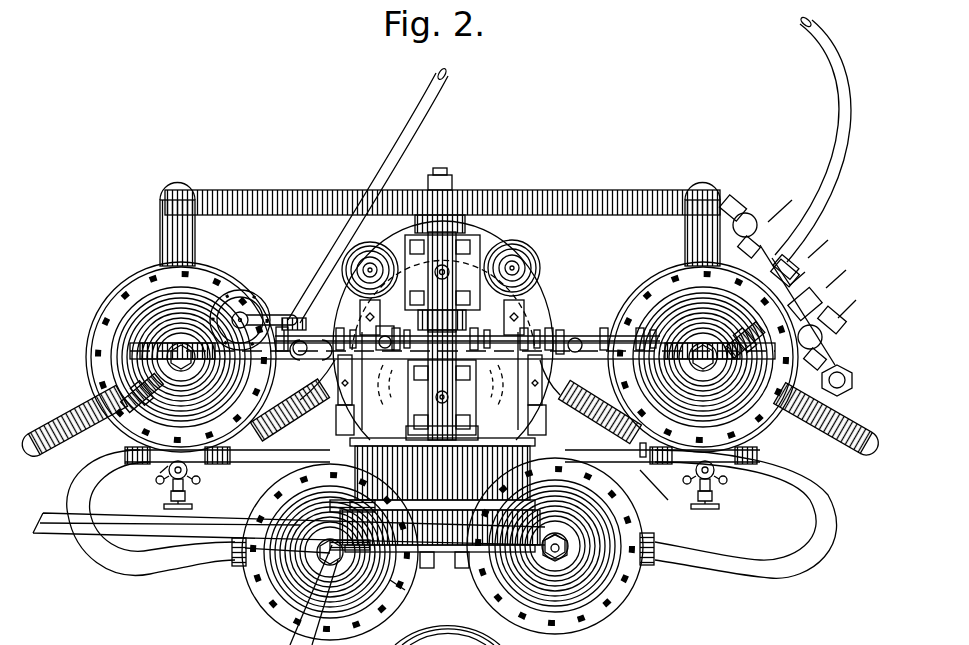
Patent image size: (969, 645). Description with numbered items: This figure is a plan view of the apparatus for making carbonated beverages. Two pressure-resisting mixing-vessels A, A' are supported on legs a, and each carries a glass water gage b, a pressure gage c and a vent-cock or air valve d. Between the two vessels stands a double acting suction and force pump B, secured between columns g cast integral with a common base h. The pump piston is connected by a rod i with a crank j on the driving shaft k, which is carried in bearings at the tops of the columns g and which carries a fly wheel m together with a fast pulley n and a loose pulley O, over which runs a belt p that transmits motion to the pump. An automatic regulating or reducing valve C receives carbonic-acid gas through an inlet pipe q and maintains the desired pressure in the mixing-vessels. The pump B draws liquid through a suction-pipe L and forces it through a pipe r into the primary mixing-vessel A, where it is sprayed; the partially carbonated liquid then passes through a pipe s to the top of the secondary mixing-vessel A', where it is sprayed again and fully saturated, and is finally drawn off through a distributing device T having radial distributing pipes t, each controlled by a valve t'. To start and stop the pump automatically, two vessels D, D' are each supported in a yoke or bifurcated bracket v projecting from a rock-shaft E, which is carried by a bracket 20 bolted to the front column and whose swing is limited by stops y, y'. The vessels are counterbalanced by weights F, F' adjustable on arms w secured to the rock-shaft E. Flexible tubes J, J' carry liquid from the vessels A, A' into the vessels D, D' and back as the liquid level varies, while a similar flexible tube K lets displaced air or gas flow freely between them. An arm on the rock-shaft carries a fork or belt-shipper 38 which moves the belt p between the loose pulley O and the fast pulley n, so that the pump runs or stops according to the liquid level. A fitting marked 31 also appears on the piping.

The fly wheel m is at (268, 198).
The legs a is at (162, 243).
The primary mixing-vessel A is at (158, 357).
The secondary mixing-vessel A' is at (687, 357).
The pressure gage c is at (140, 330).
The automatic regulating or reducing valve C is at (240, 302).
The weight F is at (338, 283).
The weight F' is at (539, 283).
The driving shaft k is at (455, 190).
The columns or standards g is at (468, 248).
The double acting suction and force pump B is at (462, 338).
The fast pulley n is at (440, 495).
The pipe s is at (292, 332).
The crank j is at (388, 332).
The pipe r is at (290, 330).
The rod i is at (470, 350).
The bracket 20 is at (366, 370).
The base h is at (545, 290).
The collar 31 is at (300, 340).
The suction-pipe L is at (678, 500).
The arms w is at (320, 380).
The stop y is at (344, 383).
The stop y' is at (536, 383).
The rock-shaft E is at (438, 389).
The vent-cock or air valve d is at (128, 400).
The flexible tube J is at (198, 511).
The flexible tube J' is at (701, 512).
The flexible tube K is at (267, 519).
The glass water gage b is at (168, 472).
The belt p is at (136, 500).
The vessel D is at (327, 554).
The vessel D' is at (555, 551).
The loose pulley O is at (513, 575).
The yoke or bifurcated bracket v is at (235, 562).
The fork or belt-shipper 38 is at (212, 475).
The inlet pipe q is at (408, 115).
The radial distributing pipes t is at (812, 206).
The valve t' is at (785, 264).
The distributing device T is at (805, 280).